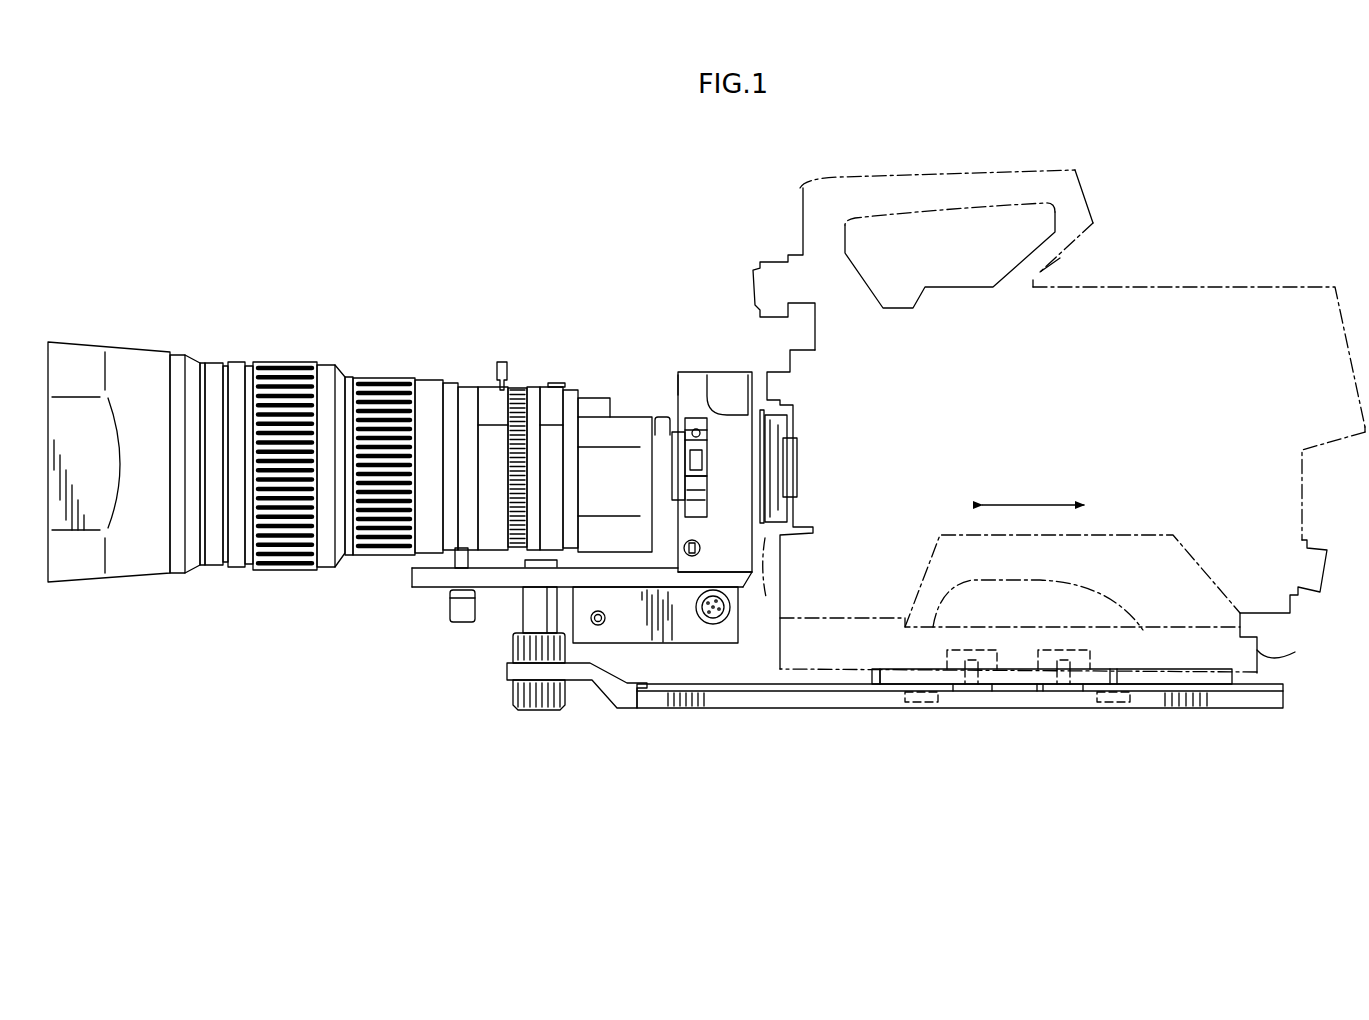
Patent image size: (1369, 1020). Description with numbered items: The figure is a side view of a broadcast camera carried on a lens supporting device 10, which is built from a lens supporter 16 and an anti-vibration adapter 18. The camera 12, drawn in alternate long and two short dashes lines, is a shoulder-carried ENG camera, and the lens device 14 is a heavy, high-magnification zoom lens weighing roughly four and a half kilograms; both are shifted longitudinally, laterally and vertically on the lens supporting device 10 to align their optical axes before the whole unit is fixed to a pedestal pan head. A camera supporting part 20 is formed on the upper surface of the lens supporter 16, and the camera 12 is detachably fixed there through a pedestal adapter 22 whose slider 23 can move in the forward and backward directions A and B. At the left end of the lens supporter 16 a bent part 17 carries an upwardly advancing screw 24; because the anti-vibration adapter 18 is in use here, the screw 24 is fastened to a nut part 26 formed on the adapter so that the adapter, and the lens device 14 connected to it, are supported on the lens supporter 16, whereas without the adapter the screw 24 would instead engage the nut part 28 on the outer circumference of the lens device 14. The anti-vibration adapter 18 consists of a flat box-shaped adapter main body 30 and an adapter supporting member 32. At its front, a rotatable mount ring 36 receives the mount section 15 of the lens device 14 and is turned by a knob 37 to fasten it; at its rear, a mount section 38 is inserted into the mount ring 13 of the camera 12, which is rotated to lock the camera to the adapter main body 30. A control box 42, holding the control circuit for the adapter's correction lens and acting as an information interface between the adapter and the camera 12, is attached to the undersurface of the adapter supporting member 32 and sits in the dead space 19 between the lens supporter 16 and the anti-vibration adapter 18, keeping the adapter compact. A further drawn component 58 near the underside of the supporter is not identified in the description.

The lens supporting device 10 is at (485, 667).
The camera 12 is at (1097, 287).
The mount ring 13 is at (782, 400).
The lens device 14 is at (280, 362).
The mount section 15 is at (675, 426).
The lens supporter 16 is at (746, 712).
The bent part 17 is at (565, 672).
The anti-vibration adapter 18 is at (675, 384).
The dead space 19 is at (638, 655).
The camera supporting part 20 is at (907, 669).
The pedestal adapter 22 is at (1293, 653).
The slider 23 is at (1000, 661).
The screw 24 is at (518, 623).
The nut part 26 is at (530, 554).
The nut part 28 is at (460, 557).
The adapter main body 30 is at (690, 378).
The adapter supporting member 32 is at (630, 578).
The mount ring 36 is at (703, 492).
The knob 37 is at (704, 434).
The mount section 38 is at (797, 440).
The control box 42 is at (685, 618).
The lock knob 58 is at (452, 606).